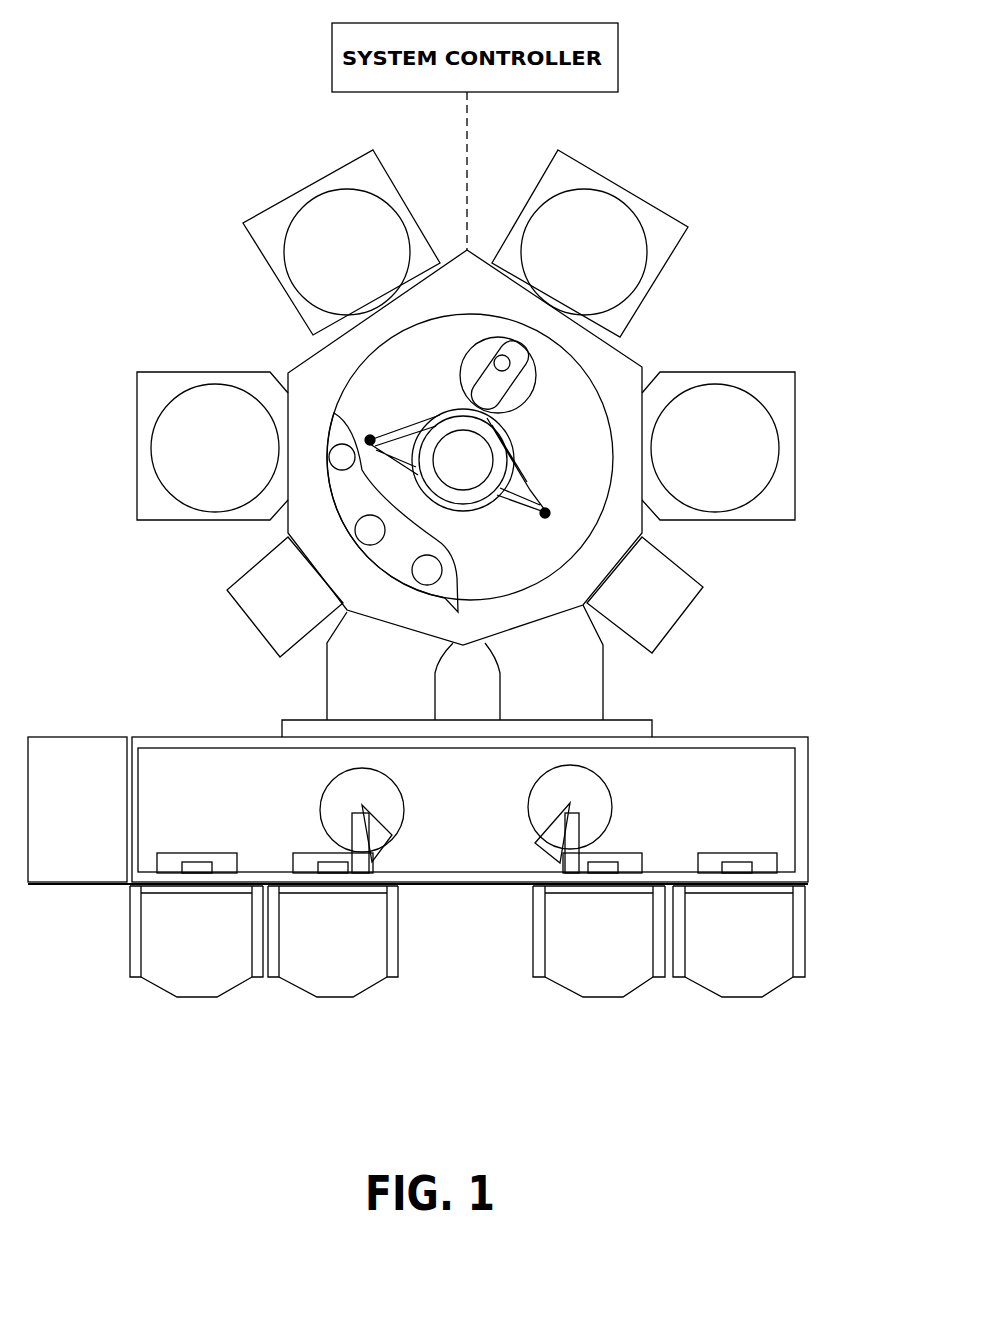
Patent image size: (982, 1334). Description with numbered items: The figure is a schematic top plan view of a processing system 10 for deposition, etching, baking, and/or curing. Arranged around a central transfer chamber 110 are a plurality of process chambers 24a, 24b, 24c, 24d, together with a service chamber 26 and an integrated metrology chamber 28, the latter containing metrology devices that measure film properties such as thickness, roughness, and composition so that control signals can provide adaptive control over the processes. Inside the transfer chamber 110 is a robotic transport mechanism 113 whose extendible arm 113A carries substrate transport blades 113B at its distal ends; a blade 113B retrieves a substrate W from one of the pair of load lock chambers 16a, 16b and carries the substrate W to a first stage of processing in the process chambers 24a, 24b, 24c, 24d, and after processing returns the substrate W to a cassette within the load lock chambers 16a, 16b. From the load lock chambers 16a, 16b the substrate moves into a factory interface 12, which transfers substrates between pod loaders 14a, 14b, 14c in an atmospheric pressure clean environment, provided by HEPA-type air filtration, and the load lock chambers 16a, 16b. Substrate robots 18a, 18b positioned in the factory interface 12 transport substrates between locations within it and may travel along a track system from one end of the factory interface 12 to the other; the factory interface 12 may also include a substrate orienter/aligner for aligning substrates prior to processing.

The processing system 10 is at (753, 195).
The factory interface 12 is at (810, 783).
The pod loader 14a is at (742, 997).
The pod loader 14b is at (602, 997).
The pod loader 14c is at (333, 997).
The load lock chamber 16a is at (607, 698).
The load lock chamber 16b is at (327, 700).
The substrate robot 18a is at (328, 782).
The substrate robot 18b is at (600, 777).
The process chamber 24a is at (763, 370).
The process chamber 24b is at (665, 265).
The process chamber 24c is at (270, 269).
The process chamber 24d is at (170, 372).
The service chamber 26 is at (247, 618).
The integrated metrology chamber 28 is at (680, 623).
The transfer chamber 110 is at (643, 362).
The transfer robot 113 is at (452, 433).
The robot wrist / end effector 113A is at (520, 433).
The robot blade 113B is at (392, 430).
The substrate W is at (488, 347).